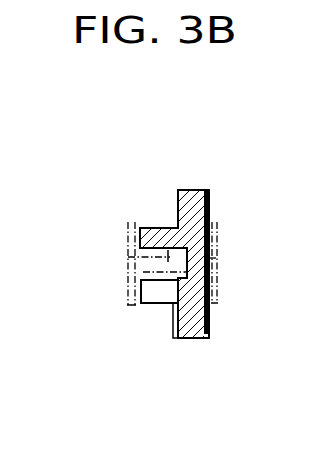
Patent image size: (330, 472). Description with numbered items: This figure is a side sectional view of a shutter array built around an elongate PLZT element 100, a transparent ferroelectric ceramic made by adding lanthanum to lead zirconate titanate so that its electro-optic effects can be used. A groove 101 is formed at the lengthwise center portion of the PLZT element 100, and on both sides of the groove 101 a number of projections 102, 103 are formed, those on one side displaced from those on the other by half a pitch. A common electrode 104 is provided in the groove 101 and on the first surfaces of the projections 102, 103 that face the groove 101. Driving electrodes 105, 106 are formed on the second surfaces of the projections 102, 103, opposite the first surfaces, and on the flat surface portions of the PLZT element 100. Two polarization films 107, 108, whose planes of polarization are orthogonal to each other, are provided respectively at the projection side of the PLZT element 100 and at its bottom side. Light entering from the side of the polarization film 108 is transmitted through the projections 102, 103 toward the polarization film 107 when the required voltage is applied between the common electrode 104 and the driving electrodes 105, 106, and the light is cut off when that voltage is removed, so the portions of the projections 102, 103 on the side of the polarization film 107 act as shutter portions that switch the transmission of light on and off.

The PLZT element 100 is at (196, 340).
The groove 101 is at (218, 247).
The projection 102 is at (156, 238).
The projection 103 is at (161, 304).
The common electrode 104 is at (142, 259).
The driving electrode 105 is at (172, 193).
The driving electrode 106 is at (173, 323).
The polarization film 107 is at (129, 241).
The polarization film 108 is at (216, 258).